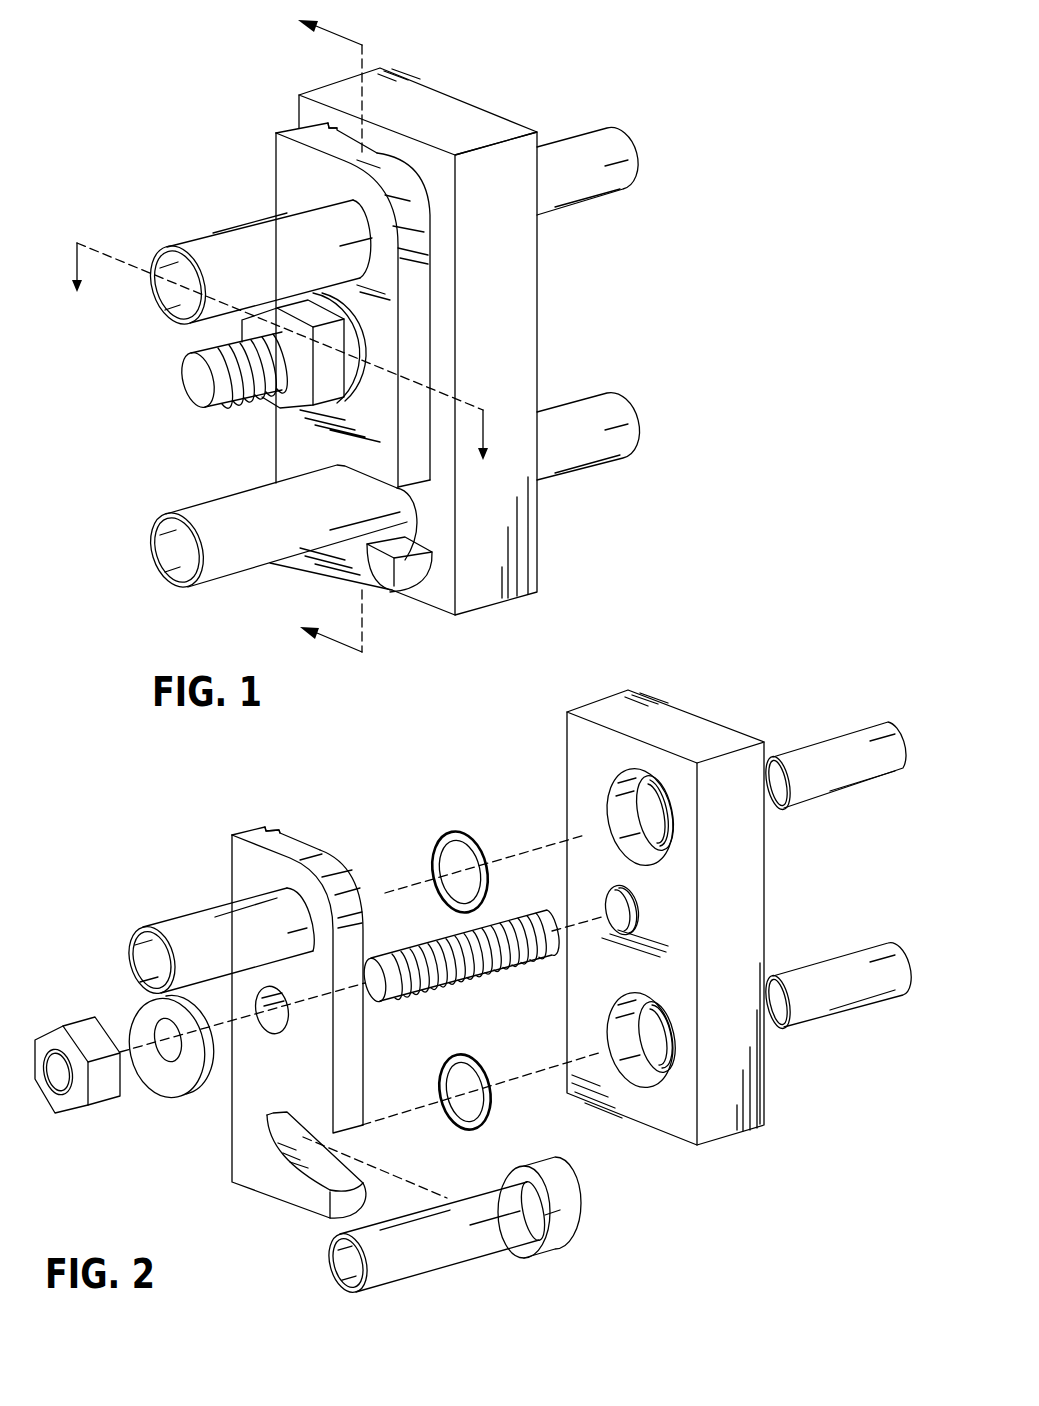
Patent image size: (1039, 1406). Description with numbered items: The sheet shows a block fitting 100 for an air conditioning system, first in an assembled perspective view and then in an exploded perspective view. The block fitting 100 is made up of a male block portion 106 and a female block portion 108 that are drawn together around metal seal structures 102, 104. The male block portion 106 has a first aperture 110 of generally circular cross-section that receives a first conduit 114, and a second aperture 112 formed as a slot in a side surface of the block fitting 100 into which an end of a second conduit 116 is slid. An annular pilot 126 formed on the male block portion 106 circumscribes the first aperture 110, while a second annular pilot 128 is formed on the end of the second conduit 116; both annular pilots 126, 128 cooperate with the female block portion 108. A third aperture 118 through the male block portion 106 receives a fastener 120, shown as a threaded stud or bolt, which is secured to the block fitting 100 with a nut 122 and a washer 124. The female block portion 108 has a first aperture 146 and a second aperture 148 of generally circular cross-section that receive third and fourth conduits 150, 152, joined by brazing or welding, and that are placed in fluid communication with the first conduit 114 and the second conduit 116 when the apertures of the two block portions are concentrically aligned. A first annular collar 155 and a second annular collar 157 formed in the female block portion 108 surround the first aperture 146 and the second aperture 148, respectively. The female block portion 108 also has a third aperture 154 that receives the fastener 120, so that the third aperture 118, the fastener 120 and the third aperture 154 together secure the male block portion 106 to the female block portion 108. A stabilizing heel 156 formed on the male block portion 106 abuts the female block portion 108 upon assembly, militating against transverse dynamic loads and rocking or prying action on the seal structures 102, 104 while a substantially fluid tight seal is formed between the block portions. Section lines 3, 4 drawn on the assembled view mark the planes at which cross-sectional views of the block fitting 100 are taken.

In FIG. 1, the block fitting 100 is at (355, 327).
In FIG. 2, the block fitting 100 is at (473, 963).
In FIG. 2, the metal seal structure 102 is at (458, 831).
In FIG. 2, the metal seal structure 104 is at (489, 1112).
In FIG. 1, the male block portion 106 is at (283, 127).
In FIG. 2, the male block portion 106 is at (253, 827).
In FIG. 1, the female block portion 108 is at (413, 87).
In FIG. 2, the female block portion 108 is at (715, 718).
In FIG. 1, the first aperture 110 is at (340, 194).
In FIG. 2, the first aperture 110 is at (300, 888).
In FIG. 1, the second aperture 112 is at (388, 590).
In FIG. 2, the second aperture 112 is at (280, 1152).
In FIG. 1, the first conduit 114 is at (167, 245).
In FIG. 2, the first conduit 114 is at (143, 927).
In FIG. 1, the second conduit 116 is at (168, 514).
In FIG. 2, the second conduit 116 is at (372, 1254).
In FIG. 2, the third aperture 118 is at (269, 1034).
In FIG. 1, the fastener 120 is at (198, 384).
In FIG. 1, the nut 122 is at (325, 382).
In FIG. 2, the nut 122 is at (97, 1108).
In FIG. 1, the washer 124 is at (353, 332).
In FIG. 2, the washer 124 is at (181, 1097).
In FIG. 2, the annular pilot 126 is at (363, 885).
In FIG. 2, the annular pilot 128 is at (570, 1220).
In FIG. 2, the first aperture 146 is at (645, 862).
In FIG. 2, the second aperture 148 is at (383, 1003).
In FIG. 1, the third conduit 150 is at (607, 128).
In FIG. 2, the third conduit 150 is at (883, 722).
In FIG. 1, the fourth conduit 152 is at (608, 393).
In FIG. 2, the fourth conduit 152 is at (880, 940).
In FIG. 2, the third aperture 154 is at (630, 912).
In FIG. 2, the first annular collar 155 is at (624, 801).
In FIG. 1, the stabilizing heel 156 is at (328, 121).
In FIG. 2, the stabilizing heel 156 is at (273, 828).
In FIG. 2, the second annular collar 157 is at (630, 1026).
In FIG. 1, the section line 3- 3 is at (316, 327).
In FIG. 1, the section line 4- 4 is at (281, 373).